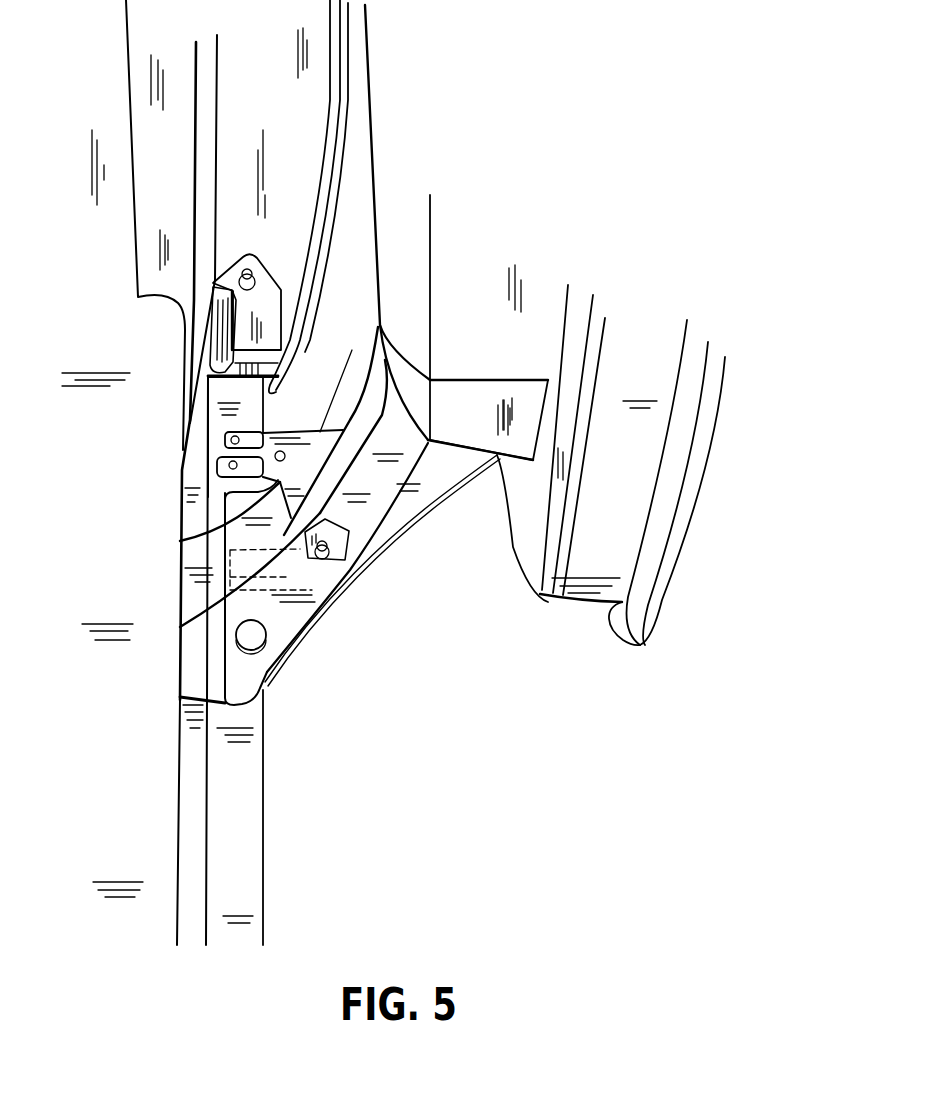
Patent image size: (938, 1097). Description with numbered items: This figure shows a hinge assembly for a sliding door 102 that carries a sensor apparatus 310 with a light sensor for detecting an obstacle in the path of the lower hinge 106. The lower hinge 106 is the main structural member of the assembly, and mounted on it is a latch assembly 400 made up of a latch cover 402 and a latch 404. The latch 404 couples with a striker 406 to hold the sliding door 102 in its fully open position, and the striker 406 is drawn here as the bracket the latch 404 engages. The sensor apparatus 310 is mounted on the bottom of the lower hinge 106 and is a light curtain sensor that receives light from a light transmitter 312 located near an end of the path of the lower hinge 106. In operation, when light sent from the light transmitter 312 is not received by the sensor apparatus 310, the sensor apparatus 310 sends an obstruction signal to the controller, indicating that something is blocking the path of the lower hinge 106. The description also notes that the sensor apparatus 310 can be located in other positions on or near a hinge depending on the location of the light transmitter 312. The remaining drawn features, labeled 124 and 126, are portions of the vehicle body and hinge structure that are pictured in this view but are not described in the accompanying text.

The sliding door 102 is at (652, 312).
The frame protrusion 124 is at (349, 374).
The striker 406 is at (213, 293).
The light transmitter 312 is at (263, 390).
The latch 404 is at (220, 454).
The latch cover 402 is at (180, 541).
The latch assembly 400 is at (375, 503).
The sensor apparatus 310 is at (333, 615).
The lower hinge 106 is at (283, 623).
The pillar lower portion 126 is at (280, 668).